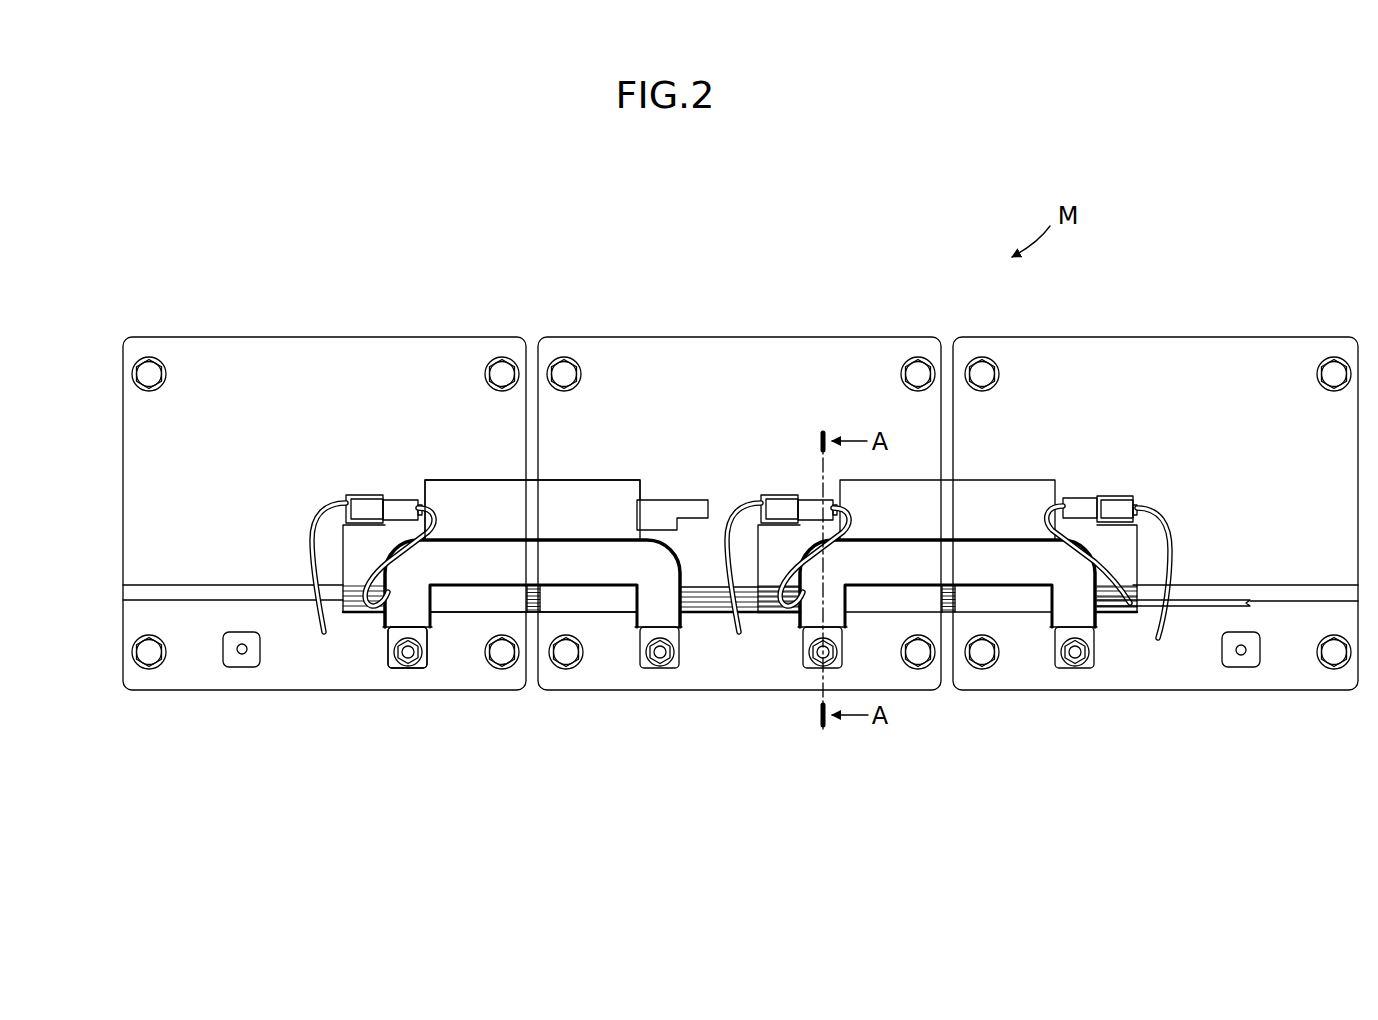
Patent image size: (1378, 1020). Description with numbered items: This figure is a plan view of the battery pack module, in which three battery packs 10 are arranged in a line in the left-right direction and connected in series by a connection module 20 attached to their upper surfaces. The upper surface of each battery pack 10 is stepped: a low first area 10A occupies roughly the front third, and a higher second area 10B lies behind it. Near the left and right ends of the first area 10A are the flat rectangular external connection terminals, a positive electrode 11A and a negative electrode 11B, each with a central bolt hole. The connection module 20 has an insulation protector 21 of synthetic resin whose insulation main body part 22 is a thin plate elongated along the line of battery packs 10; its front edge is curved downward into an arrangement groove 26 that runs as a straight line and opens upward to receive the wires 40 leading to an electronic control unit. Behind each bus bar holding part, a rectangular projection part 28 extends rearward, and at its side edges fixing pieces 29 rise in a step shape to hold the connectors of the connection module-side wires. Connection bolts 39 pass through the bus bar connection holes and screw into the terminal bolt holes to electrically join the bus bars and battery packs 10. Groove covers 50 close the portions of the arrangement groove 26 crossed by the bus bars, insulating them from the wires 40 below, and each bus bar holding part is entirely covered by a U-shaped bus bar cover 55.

The battery pack 10 is at (357, 352).
The first area 10A is at (130, 612).
The second area 10B is at (140, 573).
The positive electrode 11A is at (233, 668).
The negative electrode 11B is at (1248, 668).
The connection module 20 is at (672, 448).
The insulation protector 21 is at (704, 624).
The insulation main body part 22 is at (717, 518).
The arrangement groove 26 is at (765, 608).
The projection part 28 is at (510, 493).
The fixing piece 29 is at (657, 517).
The connection bolt 39 is at (409, 662).
The wire 40 is at (1195, 610).
The groove cover 50 is at (482, 603).
The bus bar cover 55 is at (980, 567).